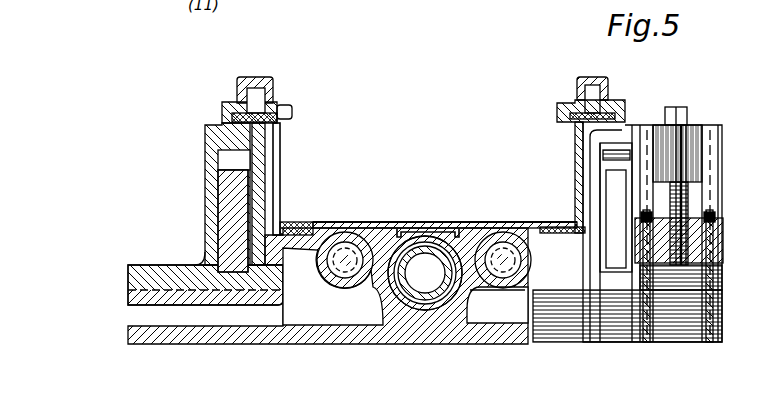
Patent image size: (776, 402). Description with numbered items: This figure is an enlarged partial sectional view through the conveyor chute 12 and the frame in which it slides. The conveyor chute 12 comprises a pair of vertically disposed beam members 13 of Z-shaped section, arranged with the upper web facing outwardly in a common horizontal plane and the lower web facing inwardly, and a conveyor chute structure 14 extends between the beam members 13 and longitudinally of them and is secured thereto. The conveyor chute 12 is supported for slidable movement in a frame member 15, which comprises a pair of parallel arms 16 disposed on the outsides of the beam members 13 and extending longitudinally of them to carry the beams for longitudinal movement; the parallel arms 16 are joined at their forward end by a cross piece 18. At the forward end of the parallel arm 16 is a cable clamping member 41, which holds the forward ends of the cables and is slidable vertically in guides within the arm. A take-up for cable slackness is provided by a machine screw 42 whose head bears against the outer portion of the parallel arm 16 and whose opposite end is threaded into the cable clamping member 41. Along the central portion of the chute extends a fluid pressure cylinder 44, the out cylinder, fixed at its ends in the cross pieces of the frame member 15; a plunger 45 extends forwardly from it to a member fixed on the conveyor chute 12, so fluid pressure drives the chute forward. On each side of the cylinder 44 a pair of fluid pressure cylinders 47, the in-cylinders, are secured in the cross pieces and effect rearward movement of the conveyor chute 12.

The conveyor chute 12 is at (273, 157).
The beam members 13 is at (273, 193).
The conveyor chute structure 14 is at (383, 222).
The frame member 15 is at (205, 138).
The parallel arms 16 is at (275, 85).
The cross piece 18 is at (128, 290).
The cable clamping member 41 is at (722, 235).
The machine screw 42 is at (688, 112).
The fluid pressure cylinder 44 is at (497, 304).
The plunger 45 is at (395, 298).
The fluid pressure cylinders 47 is at (334, 285).